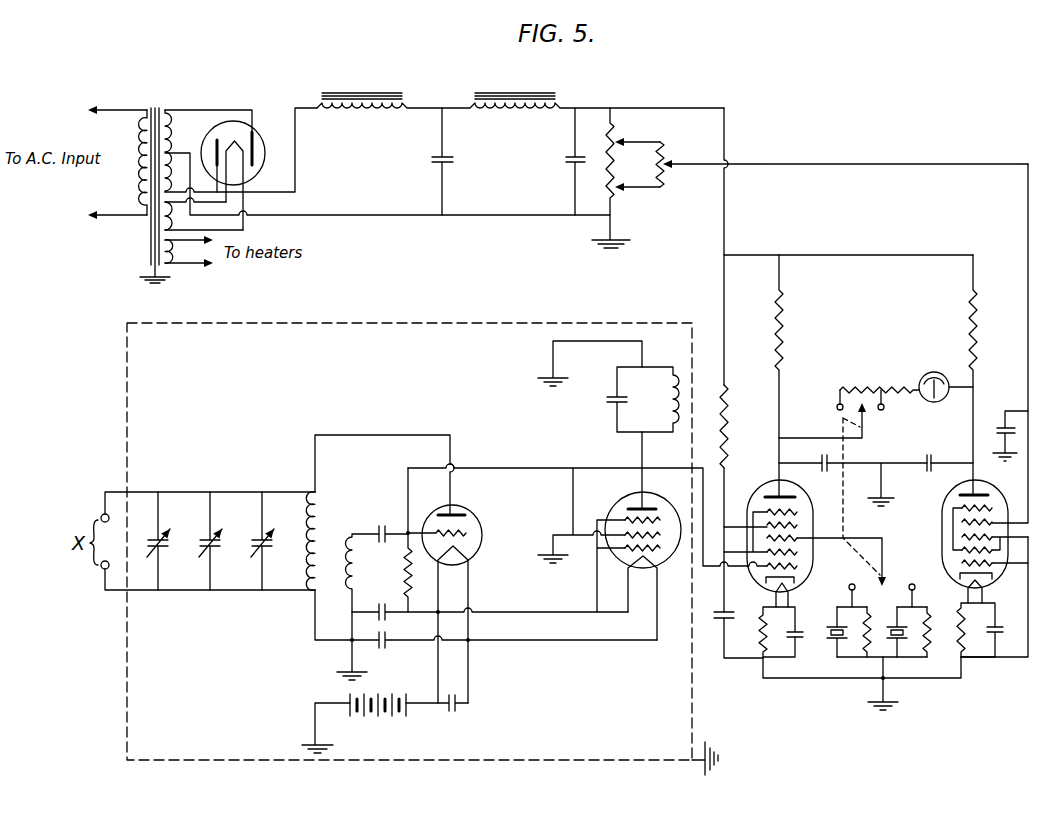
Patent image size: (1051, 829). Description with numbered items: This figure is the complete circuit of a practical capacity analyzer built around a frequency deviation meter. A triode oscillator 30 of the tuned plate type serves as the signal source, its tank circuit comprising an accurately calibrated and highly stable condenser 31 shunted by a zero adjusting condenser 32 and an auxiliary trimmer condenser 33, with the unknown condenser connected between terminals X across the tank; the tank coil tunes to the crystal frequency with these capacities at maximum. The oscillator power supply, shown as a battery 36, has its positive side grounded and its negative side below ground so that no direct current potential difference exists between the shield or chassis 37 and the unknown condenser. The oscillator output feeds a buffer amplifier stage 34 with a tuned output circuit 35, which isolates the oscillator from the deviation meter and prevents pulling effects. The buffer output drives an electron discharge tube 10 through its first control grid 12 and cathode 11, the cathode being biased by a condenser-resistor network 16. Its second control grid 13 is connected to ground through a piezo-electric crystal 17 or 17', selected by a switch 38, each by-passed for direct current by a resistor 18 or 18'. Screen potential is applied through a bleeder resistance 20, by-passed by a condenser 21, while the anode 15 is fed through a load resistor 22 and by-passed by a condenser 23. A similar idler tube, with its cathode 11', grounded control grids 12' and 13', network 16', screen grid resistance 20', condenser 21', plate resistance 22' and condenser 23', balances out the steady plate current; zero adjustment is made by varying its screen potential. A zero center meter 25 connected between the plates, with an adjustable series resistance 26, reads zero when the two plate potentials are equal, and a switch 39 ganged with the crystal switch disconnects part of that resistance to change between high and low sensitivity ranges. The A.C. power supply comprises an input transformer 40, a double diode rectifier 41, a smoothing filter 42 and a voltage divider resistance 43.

The electron discharge tube 10 is at (806, 569).
The cathode 11 is at (798, 595).
The cathode 11' is at (994, 591).
The first control grid 12 is at (807, 559).
The first control grid 12' is at (957, 578).
The second control grid 13 is at (808, 523).
The second control grid 13' is at (945, 555).
The anode 15 is at (777, 493).
The condenser-resistor network 16 is at (781, 632).
The condenser-resistor network 16' is at (980, 630).
The piezo-electric crystal 17 is at (828, 639).
The piezo-electric crystal 17' is at (919, 656).
The resistor 18 is at (879, 624).
The resistor 18' is at (964, 650).
The bleeder resistance 20 is at (741, 426).
The screen grid resistance 20' is at (821, 164).
The condenser 21 is at (717, 633).
The condenser 21' is at (997, 431).
The load resistor 22 is at (800, 376).
The plate resistance 22' is at (994, 375).
The condenser 23 is at (830, 477).
The condenser 23' is at (932, 477).
The meter 25 is at (934, 373).
The adjustable series resistance 26 is at (905, 385).
The triode oscillator 30 is at (479, 521).
The condenser 31 is at (168, 541).
The zero adjusting condenser 32 is at (220, 541).
The auxiliary trimmer condenser 33 is at (271, 541).
The buffer amplifier stage 34 is at (630, 503).
The tuned output circuit 35 is at (643, 399).
The battery 36 is at (378, 694).
The shield or chassis 37 is at (511, 760).
The switch 38 is at (884, 557).
The switch 39 is at (866, 418).
The input transformer 40 is at (156, 112).
The double diode rectifier 41 is at (257, 138).
The smoothing filter 42 is at (380, 168).
The voltage divider resistance 43 is at (618, 178).